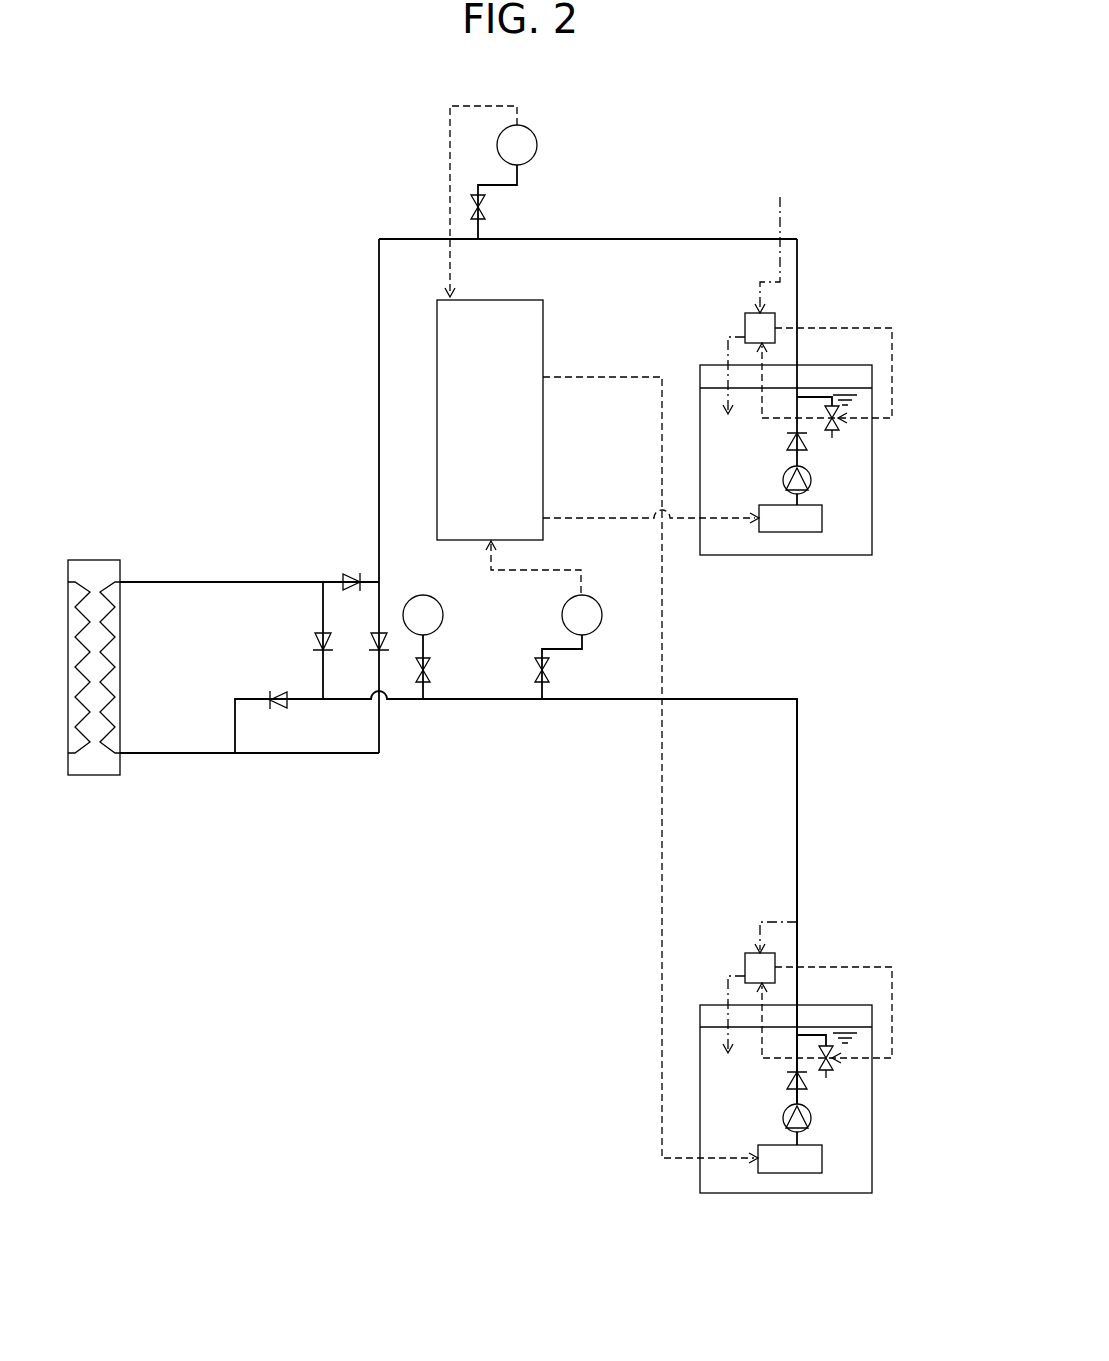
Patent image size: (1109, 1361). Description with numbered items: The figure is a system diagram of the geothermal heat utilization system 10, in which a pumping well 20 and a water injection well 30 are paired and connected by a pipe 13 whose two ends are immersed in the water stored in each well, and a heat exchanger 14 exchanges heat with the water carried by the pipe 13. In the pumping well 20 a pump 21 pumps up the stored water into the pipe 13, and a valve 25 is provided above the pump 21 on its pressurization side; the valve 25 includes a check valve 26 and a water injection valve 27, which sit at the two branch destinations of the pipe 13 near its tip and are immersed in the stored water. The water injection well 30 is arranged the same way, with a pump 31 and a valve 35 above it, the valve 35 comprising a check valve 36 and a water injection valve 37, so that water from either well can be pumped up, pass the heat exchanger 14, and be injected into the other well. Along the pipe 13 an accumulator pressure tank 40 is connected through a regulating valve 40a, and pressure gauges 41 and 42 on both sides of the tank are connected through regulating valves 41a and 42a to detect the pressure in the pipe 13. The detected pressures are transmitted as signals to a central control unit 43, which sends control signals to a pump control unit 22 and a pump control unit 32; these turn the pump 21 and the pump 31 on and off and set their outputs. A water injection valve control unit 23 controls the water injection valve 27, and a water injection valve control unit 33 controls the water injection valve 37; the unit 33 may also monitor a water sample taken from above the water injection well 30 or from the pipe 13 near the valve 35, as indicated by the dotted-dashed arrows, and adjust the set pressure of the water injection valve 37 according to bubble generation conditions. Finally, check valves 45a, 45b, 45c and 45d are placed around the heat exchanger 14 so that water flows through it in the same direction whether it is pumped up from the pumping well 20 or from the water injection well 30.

The geothermal heat utilization system 10 is at (253, 1003).
The pipe 13 is at (797, 740).
The heat exchanger 14 is at (92, 560).
The pumping well 20 is at (767, 1042).
The pump 21 is at (808, 1130).
The pump control unit 22 is at (822, 1158).
The water injection valve control unit 23 is at (748, 950).
The valve 25 is at (767, 1076).
The check valve 26 is at (790, 1085).
The water injection valve 27 is at (832, 1066).
The water injection well 30 is at (837, 361).
The pump 31 is at (810, 492).
The pump control unit 32 is at (822, 518).
The water injection valve control unit 33 is at (748, 312).
The valve 35 is at (884, 377).
The check valve 36 is at (806, 447).
The water injection valve 37 is at (829, 405).
The accumulator pressure tank 40 is at (420, 595).
The regulating valve 40a is at (429, 668).
The pressure gauge 41 is at (562, 613).
The regulating valve 41a is at (549, 668).
The pressure gauge 42 is at (538, 146).
The regulating valve 42a is at (486, 208).
The central control unit 43 is at (508, 300).
The check valve 45a is at (281, 712).
The check valve 45b is at (352, 572).
The check valve 45c is at (386, 648).
The check valve 45d is at (312, 636).